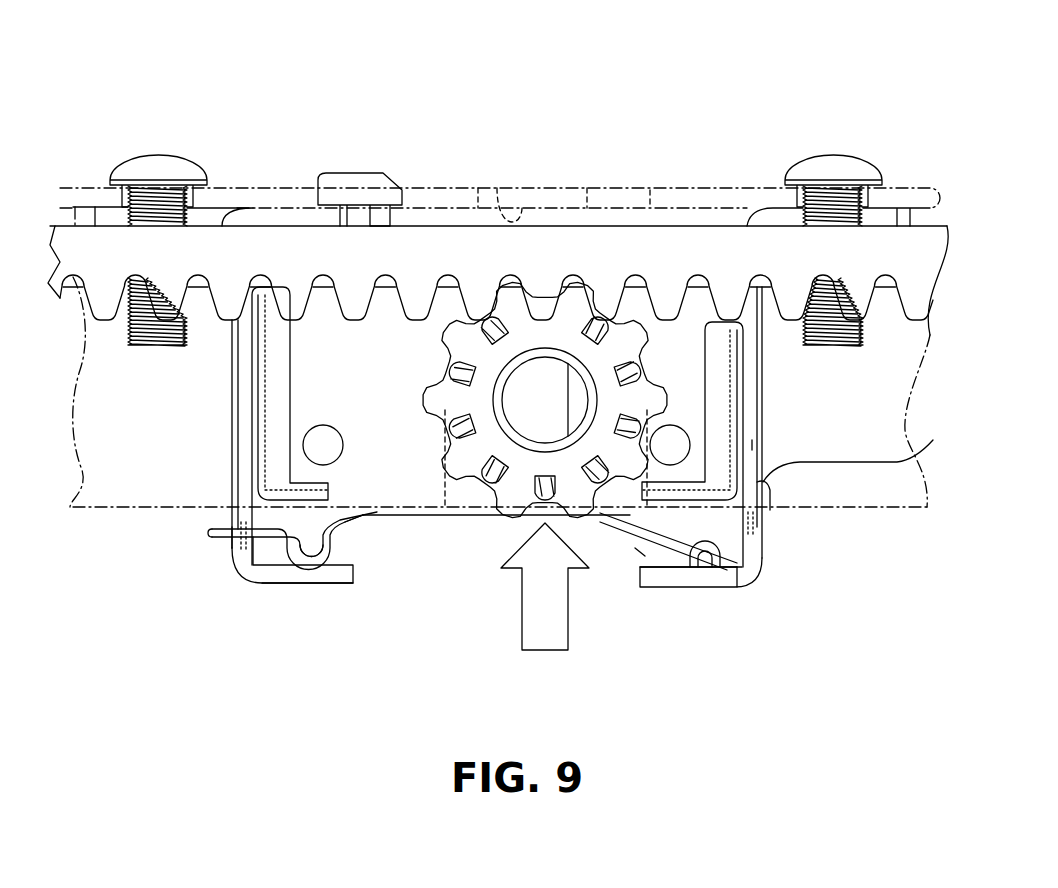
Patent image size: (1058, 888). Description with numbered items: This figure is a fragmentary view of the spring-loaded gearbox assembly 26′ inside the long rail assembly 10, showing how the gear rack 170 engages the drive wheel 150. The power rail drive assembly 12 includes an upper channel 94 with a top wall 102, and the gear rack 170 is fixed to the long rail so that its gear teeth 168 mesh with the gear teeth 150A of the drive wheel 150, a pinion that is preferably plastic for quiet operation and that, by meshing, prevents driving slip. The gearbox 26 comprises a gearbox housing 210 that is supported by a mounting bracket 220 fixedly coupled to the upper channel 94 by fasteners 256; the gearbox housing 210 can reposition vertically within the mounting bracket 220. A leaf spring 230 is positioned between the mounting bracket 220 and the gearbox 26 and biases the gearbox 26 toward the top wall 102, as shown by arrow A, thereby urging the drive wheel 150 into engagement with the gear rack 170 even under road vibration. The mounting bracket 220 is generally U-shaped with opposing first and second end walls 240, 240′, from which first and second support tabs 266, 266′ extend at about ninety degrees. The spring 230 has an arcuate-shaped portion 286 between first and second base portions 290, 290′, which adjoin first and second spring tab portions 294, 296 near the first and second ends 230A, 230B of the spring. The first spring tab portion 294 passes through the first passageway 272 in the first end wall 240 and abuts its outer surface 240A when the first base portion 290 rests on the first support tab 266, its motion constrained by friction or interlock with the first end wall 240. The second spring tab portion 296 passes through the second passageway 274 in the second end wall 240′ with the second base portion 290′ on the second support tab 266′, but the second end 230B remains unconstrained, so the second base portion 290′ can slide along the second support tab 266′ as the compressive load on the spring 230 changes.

The seat assembly 10 is at (303, 92).
The power rail drive assembly 12 is at (855, 85).
The gearbox 26 is at (432, 520).
The spring-loaded gearbox assembly 26′ is at (155, 597).
The upper channel 94 is at (587, 185).
The top wall 102 is at (497, 188).
The drive wheel 150 is at (655, 385).
The gear teeth 150A is at (513, 515).
The gear teeth 168 is at (100, 300).
The gear rack 170 is at (100, 222).
The gearbox housing 210 is at (712, 510).
The mounting bracket 220 is at (262, 587).
The spring 230 is at (617, 523).
The first end 230A is at (915, 458).
The second end 230B is at (232, 560).
The first end wall 240 is at (752, 445).
The second end wall 240′ is at (238, 386).
The outer surface 240A is at (764, 387).
The fastener 256 is at (142, 155).
The first support tab 266 is at (655, 560).
The second support tab 266′ is at (300, 578).
The first passageway 272 is at (755, 540).
The second passageway 274 is at (233, 550).
The arcuate-shaped portion 286 is at (635, 548).
The first base portion 290 is at (692, 560).
The second base portion 290′ is at (312, 565).
The first spring tab portion 294 is at (765, 497).
The second spring tab portion 296 is at (222, 530).
The arrow A is at (545, 601).